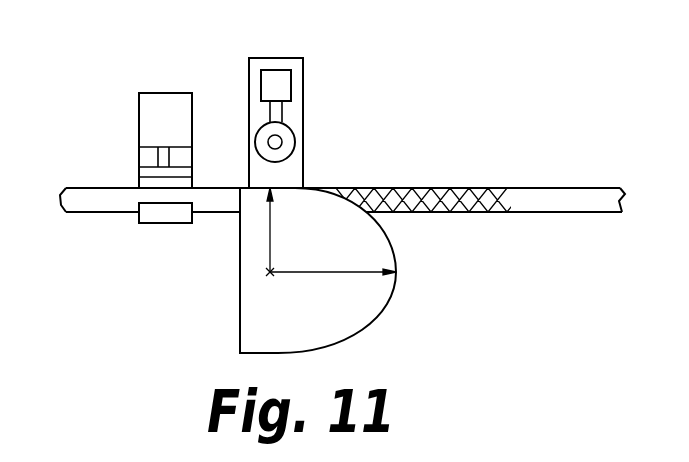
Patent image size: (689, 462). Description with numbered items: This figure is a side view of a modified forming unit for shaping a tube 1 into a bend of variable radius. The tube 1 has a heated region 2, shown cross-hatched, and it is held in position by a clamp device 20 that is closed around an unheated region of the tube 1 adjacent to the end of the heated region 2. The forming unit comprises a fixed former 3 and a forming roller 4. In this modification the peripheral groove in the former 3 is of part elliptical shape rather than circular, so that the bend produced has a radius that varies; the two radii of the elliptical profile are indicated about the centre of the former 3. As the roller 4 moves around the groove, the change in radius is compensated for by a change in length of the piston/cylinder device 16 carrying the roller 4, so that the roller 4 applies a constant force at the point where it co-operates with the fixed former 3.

The tube 1 is at (573, 209).
The heated region 2 is at (423, 189).
The former 3 is at (377, 310).
The forming roller 4 is at (297, 140).
The piston/cylinder device 16 is at (290, 80).
The clamp device 20 is at (152, 119).